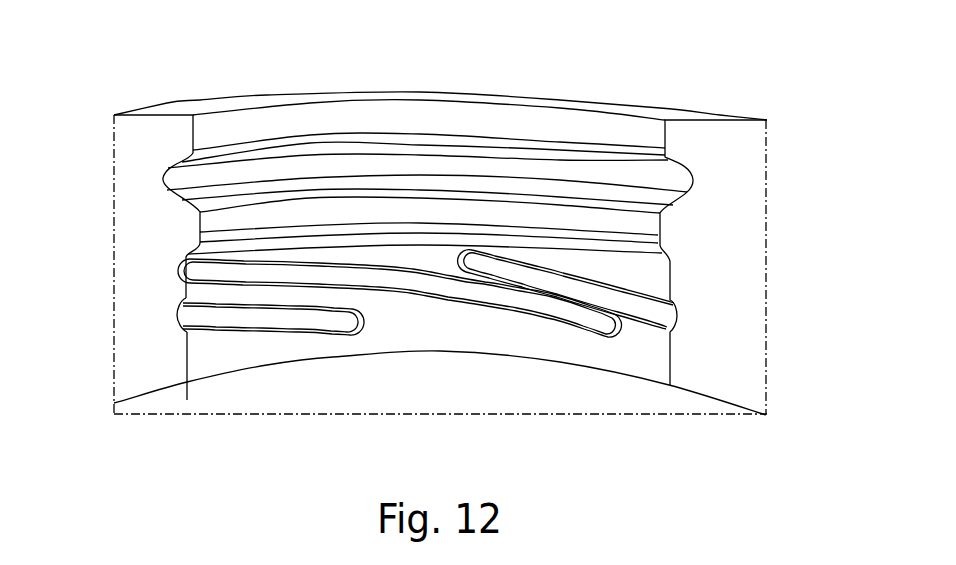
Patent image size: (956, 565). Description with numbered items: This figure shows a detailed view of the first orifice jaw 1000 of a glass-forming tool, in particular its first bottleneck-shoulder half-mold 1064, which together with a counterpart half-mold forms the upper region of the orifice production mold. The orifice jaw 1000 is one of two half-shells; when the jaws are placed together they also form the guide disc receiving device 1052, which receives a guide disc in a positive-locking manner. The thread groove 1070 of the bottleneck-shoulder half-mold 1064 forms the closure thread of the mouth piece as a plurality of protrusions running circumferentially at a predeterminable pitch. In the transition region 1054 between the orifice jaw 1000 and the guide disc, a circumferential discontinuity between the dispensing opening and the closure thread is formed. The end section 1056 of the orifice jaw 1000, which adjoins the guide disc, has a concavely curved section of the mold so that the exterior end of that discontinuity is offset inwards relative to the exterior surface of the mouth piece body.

The first orifice jaw 1000 is at (186, 68).
The thread groove 1070 is at (377, 282).
The first bottleneck-shoulder half-mold 1064 is at (778, 120).
The end section 1056 is at (98, 303).
The transition region 1054 is at (187, 384).
The guide disc receiving device 1052 is at (377, 368).